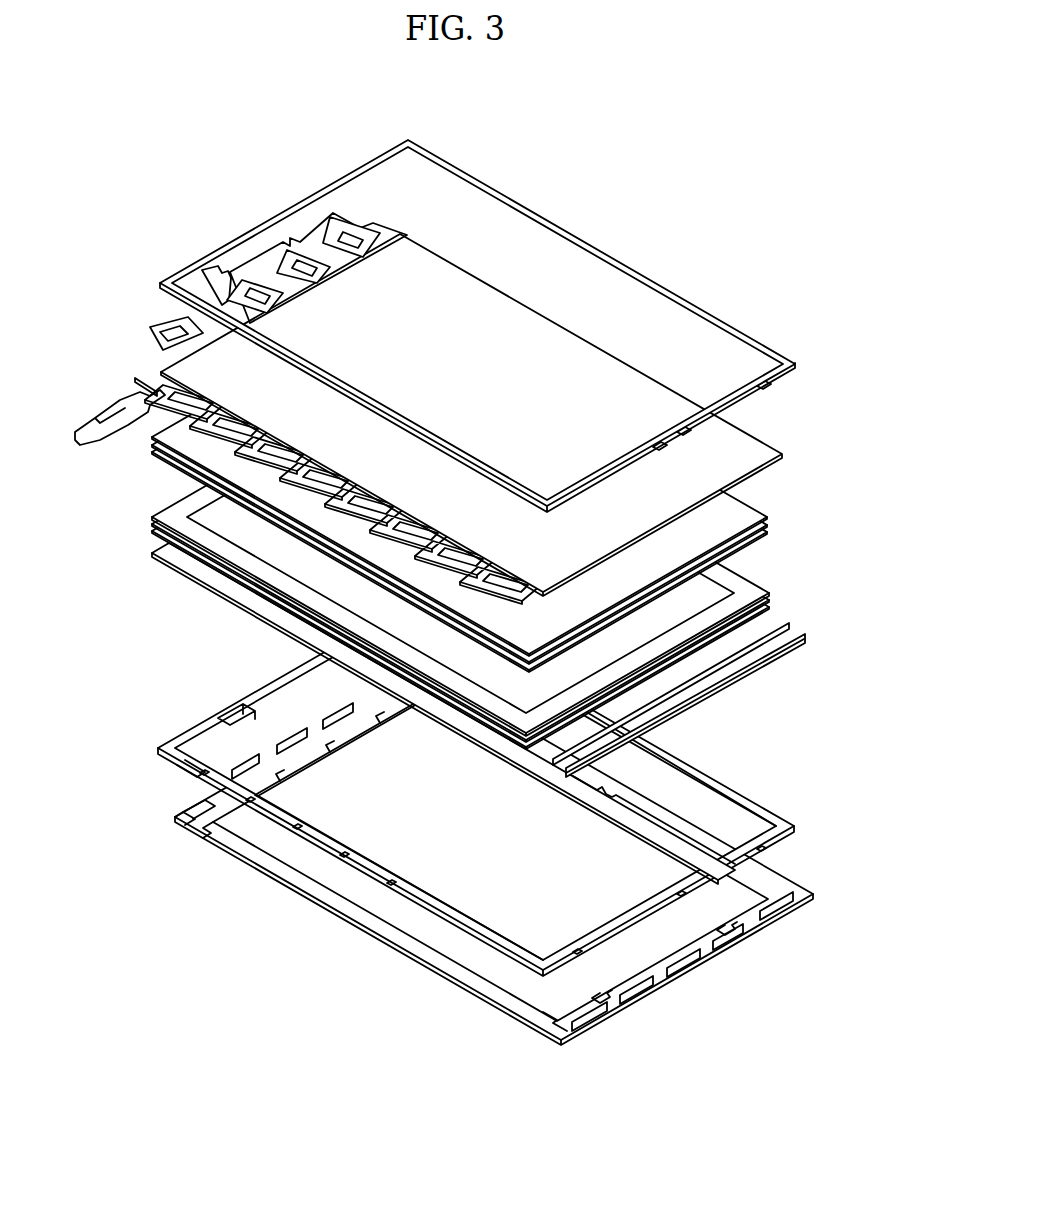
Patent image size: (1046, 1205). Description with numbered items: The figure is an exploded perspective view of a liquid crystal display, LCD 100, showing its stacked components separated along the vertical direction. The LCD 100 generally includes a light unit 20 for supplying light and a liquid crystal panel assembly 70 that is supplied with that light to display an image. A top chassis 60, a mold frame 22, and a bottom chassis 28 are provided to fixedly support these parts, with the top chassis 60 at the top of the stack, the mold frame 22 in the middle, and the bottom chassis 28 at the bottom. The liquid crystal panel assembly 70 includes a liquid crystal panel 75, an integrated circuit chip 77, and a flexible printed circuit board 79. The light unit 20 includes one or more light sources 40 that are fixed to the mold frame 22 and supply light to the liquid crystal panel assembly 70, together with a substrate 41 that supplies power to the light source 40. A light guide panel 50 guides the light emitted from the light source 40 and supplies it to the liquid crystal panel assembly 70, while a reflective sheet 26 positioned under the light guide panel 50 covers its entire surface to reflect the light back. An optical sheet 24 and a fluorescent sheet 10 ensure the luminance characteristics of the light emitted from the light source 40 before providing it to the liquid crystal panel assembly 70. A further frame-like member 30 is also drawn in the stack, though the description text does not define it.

The LCD 100 is at (447, 592).
The light unit 20 is at (444, 488).
The liquid crystal panel assembly 70 is at (434, 662).
The top chassis 60 is at (778, 352).
The mold frame 22 is at (195, 722).
The bottom chassis 28 is at (240, 860).
The optical sheet 24 is at (152, 435).
The fluorescent sheet 10 is at (152, 516).
The light guide panel 50 is at (152, 528).
The reflective sheet 26 is at (172, 551).
The frame member 30 is at (175, 507).
The light source 40 is at (757, 651).
The substrate 41 is at (704, 705).
The liquid crystal panel 75 is at (752, 438).
The integrated circuit (IC) chip 77 is at (352, 498).
The flexible printed circuit (FPC) board 79 is at (375, 522).